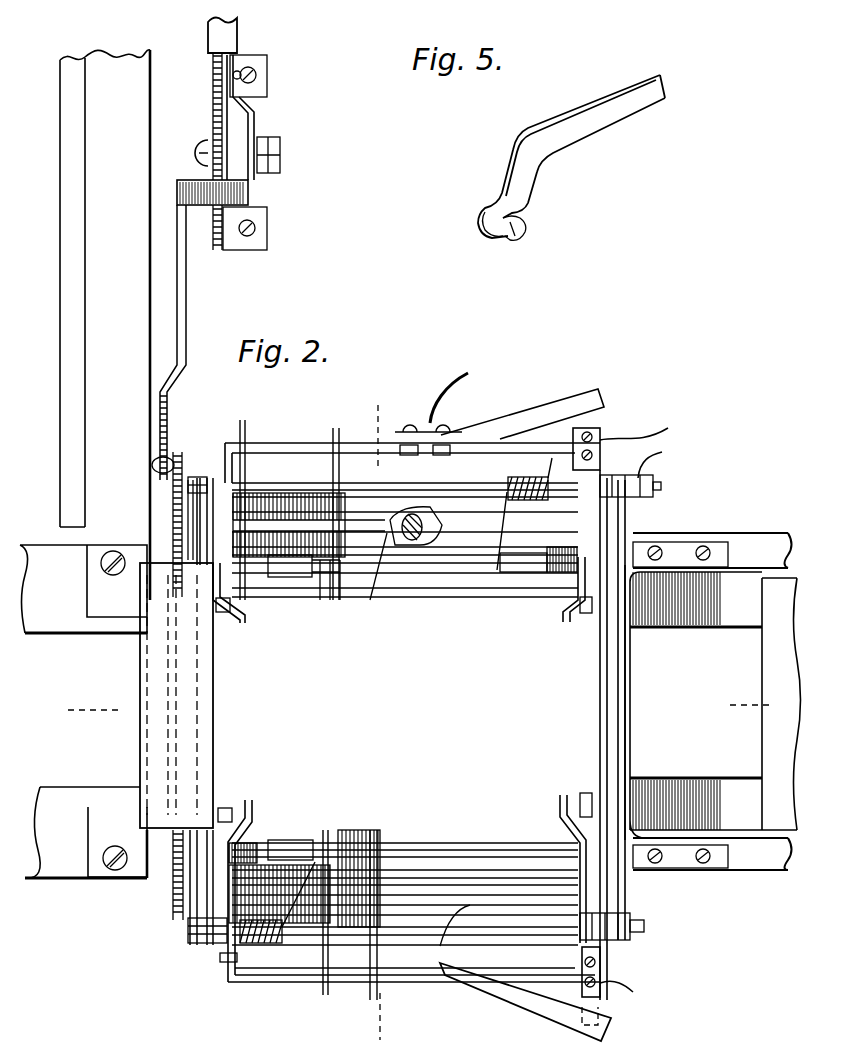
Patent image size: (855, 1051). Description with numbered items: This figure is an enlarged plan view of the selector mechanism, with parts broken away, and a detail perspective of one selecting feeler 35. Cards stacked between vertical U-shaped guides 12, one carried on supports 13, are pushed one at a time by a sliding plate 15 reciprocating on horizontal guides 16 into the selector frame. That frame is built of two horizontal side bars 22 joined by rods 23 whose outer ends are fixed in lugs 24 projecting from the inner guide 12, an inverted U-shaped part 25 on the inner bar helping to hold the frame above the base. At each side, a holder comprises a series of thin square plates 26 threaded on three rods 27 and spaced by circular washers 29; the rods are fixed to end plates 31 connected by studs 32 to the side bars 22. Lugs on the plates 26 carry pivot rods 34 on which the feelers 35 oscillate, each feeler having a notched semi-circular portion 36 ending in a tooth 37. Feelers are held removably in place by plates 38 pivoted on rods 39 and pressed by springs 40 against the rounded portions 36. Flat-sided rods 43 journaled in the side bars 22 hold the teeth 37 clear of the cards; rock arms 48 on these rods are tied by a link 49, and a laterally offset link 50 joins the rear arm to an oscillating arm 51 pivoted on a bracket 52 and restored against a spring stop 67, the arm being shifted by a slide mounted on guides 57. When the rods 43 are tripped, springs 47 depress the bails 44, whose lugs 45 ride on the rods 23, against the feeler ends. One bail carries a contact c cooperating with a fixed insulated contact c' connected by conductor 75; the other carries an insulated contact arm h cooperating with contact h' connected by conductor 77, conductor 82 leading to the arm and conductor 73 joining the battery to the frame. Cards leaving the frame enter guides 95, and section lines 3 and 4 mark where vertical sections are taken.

In FIG. 5, the selecting feelers or fingers 35 is at (592, 124).
In FIG. 2, the selecting feelers or fingers 35 is at (241, 430).
In FIG. 5, the semi-circular portion 36 is at (479, 220).
In FIG. 5, the tooth 37 is at (516, 240).
In FIG. 2, the guides 57 is at (105, 325).
In FIG. 2, the guides 95 is at (60, 613).
In FIG. 2, the section line 4— 4 is at (414, 709).
In FIG. 2, the spring buffer or stop 67 is at (217, 53).
In FIG. 2, the bracket 52 is at (218, 110).
In FIG. 2, the oscillating arm 51 is at (232, 78).
In FIG. 2, the link 50 is at (180, 287).
In FIG. 2, the rock arms 48 is at (180, 455).
In FIG. 2, the link 49 is at (172, 495).
In FIG. 2, the plates or bars 22 is at (604, 730).
In FIG. 2, the lugs 45 is at (230, 468).
In FIG. 2, the part or bracket 25 is at (190, 705).
In FIG. 2, the bail 44 is at (491, 442).
In FIG. 2, the rods 23 is at (467, 492).
In FIG. 2, the plates 26 is at (287, 495).
In FIG. 2, the rods 27 is at (428, 514).
In FIG. 2, the plates 38 is at (410, 587).
In FIG. 2, the rods 39 is at (445, 590).
In FIG. 2, the springs 40 is at (530, 575).
In FIG. 2, the rods 43 is at (420, 742).
In FIG. 2, the circular washers 29 is at (340, 600).
In FIG. 2, the pivot rods 34 is at (385, 843).
In FIG. 2, the plates 31 is at (240, 612).
In FIG. 2, the studs 32 is at (228, 614).
In FIG. 2, the springs 47 is at (528, 484).
In FIG. 2, the contact arm h is at (522, 410).
In FIG. 2, the fixed insulated contact h' is at (608, 431).
In FIG. 2, the conductor 82 is at (447, 394).
In FIG. 2, the section line 3— 3 is at (376, 718).
In FIG. 2, the conductor 77 is at (634, 425).
In FIG. 2, the conductor 73 is at (662, 459).
In FIG. 2, the conductor 75 is at (635, 970).
In FIG. 2, the lugs 24 is at (630, 500).
In FIG. 2, the supports 13 is at (745, 535).
In FIG. 2, the U-shaped guides 12 is at (628, 730).
In FIG. 2, the horizontal guides 16 is at (658, 620).
In FIG. 2, the plunger or sliding plate 15 is at (770, 650).
In FIG. 2, the contact c is at (525, 1002).
In FIG. 2, the fixed insulated contact c' is at (613, 1008).